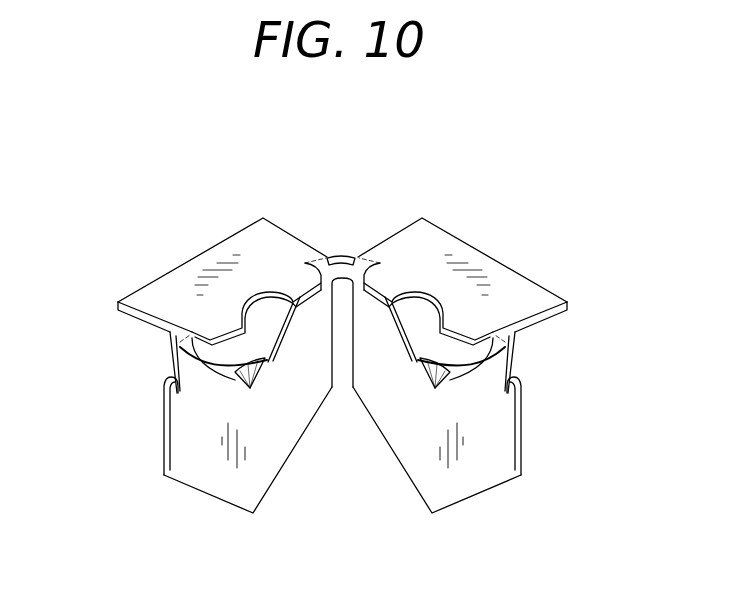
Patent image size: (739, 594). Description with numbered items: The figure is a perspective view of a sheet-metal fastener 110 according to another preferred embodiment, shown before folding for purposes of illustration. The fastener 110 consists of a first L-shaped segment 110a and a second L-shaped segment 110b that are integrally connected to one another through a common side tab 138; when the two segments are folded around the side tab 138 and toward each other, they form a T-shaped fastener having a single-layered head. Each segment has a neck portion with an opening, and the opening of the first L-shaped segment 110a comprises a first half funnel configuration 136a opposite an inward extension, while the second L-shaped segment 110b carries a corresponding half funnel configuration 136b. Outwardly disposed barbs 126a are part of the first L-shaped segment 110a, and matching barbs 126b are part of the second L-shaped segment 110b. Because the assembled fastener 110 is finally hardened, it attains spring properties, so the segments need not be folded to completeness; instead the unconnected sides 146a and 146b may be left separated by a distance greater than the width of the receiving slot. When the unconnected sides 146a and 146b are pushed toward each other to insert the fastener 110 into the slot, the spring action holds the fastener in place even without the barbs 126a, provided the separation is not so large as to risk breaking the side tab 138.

The fastener 110 is at (449, 121).
The first L-shaped segment 110a is at (502, 365).
The second L-shaped segment 110b is at (182, 357).
The side tab 138 is at (331, 254).
The first half funnel configuration 136a is at (505, 347).
The second half funnel configuration 136b is at (180, 347).
The outwardly disposed barbs 126a is at (525, 383).
The outwardly disposed barbs 126b is at (160, 383).
The unconnected side 146a is at (473, 483).
The unconnected side 146b is at (198, 465).